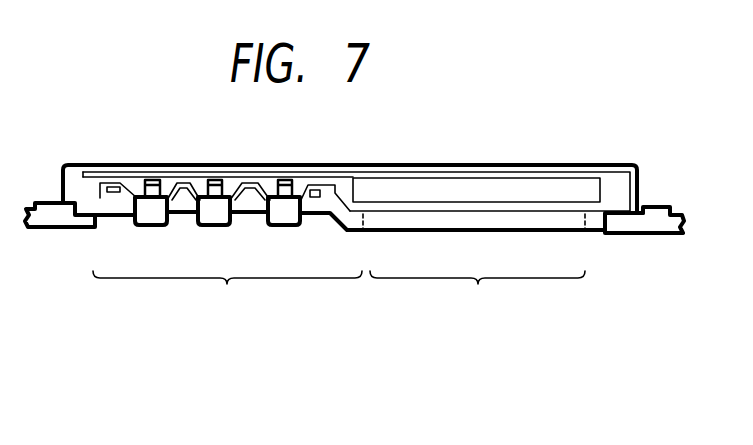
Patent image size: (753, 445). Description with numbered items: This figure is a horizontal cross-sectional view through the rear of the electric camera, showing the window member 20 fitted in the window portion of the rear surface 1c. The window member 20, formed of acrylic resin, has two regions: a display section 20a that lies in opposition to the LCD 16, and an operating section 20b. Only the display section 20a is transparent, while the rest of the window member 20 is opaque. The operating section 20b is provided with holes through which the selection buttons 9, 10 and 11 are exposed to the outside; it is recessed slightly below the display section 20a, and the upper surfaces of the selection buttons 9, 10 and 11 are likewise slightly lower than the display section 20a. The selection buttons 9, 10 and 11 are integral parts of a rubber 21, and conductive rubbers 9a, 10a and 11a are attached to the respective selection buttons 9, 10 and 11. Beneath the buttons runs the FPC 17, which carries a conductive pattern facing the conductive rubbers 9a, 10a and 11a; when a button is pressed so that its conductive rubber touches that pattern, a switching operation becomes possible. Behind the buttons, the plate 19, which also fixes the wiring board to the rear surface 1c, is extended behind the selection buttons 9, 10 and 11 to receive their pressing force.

The rear surface 1c is at (52, 218).
The rubber 21 is at (103, 176).
The selection button 11 is at (150, 217).
The conductive rubber 11a is at (151, 178).
The selection button 10 is at (217, 215).
The conductive rubber 10a is at (220, 178).
The selection button 9 is at (285, 215).
The conductive rubber 9a is at (292, 177).
The plate 19 is at (405, 170).
The FPC 17 is at (486, 173).
The LCD 16 is at (541, 192).
The window member 20 is at (350, 222).
The operating section 20b is at (227, 293).
The display section 20a is at (477, 295).